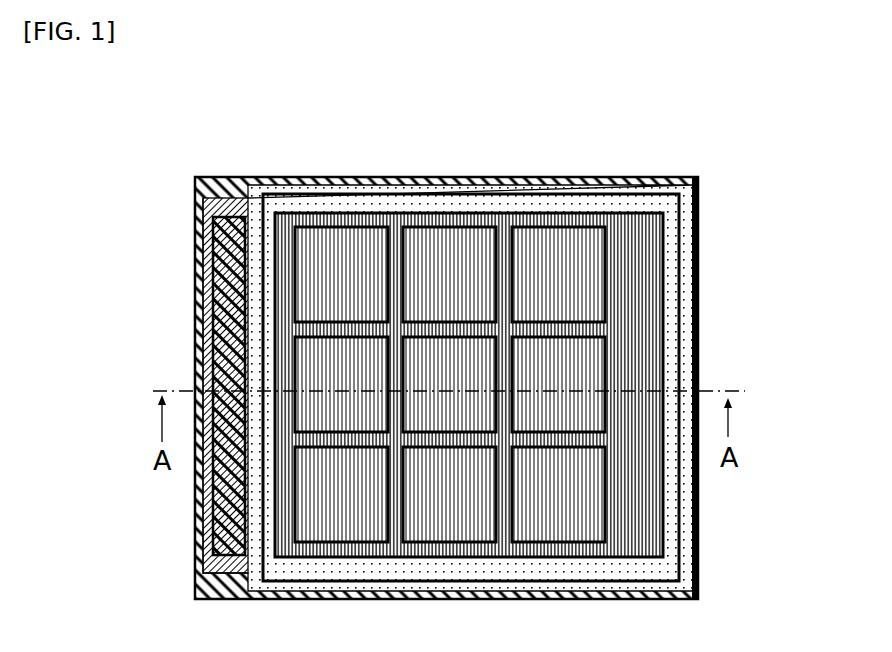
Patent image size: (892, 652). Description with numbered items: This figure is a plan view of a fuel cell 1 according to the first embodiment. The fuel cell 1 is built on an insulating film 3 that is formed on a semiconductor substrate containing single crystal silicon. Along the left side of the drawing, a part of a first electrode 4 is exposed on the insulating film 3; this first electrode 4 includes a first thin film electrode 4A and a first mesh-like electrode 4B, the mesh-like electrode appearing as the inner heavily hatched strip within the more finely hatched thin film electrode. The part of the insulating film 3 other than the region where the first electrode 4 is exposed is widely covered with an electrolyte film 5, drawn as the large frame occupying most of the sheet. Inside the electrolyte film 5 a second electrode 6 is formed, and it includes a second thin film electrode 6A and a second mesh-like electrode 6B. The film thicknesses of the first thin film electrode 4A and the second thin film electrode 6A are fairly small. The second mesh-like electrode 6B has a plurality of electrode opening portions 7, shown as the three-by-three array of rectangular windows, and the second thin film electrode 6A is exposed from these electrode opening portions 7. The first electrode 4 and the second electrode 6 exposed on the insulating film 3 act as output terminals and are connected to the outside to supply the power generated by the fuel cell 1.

The fuel cell 1 is at (438, 351).
The insulating film 3 is at (202, 225).
The first electrode 4 is at (137, 385).
The first thin film electrode 4A is at (207, 341).
The first mesh-like electrode 4B is at (220, 306).
The electrolyte film 5 is at (683, 223).
The second electrode 6 is at (562, 385).
The second thin film electrode 6A is at (667, 338).
The second mesh-like electrode 6B is at (652, 283).
The electrode opening portions 7 is at (602, 527).